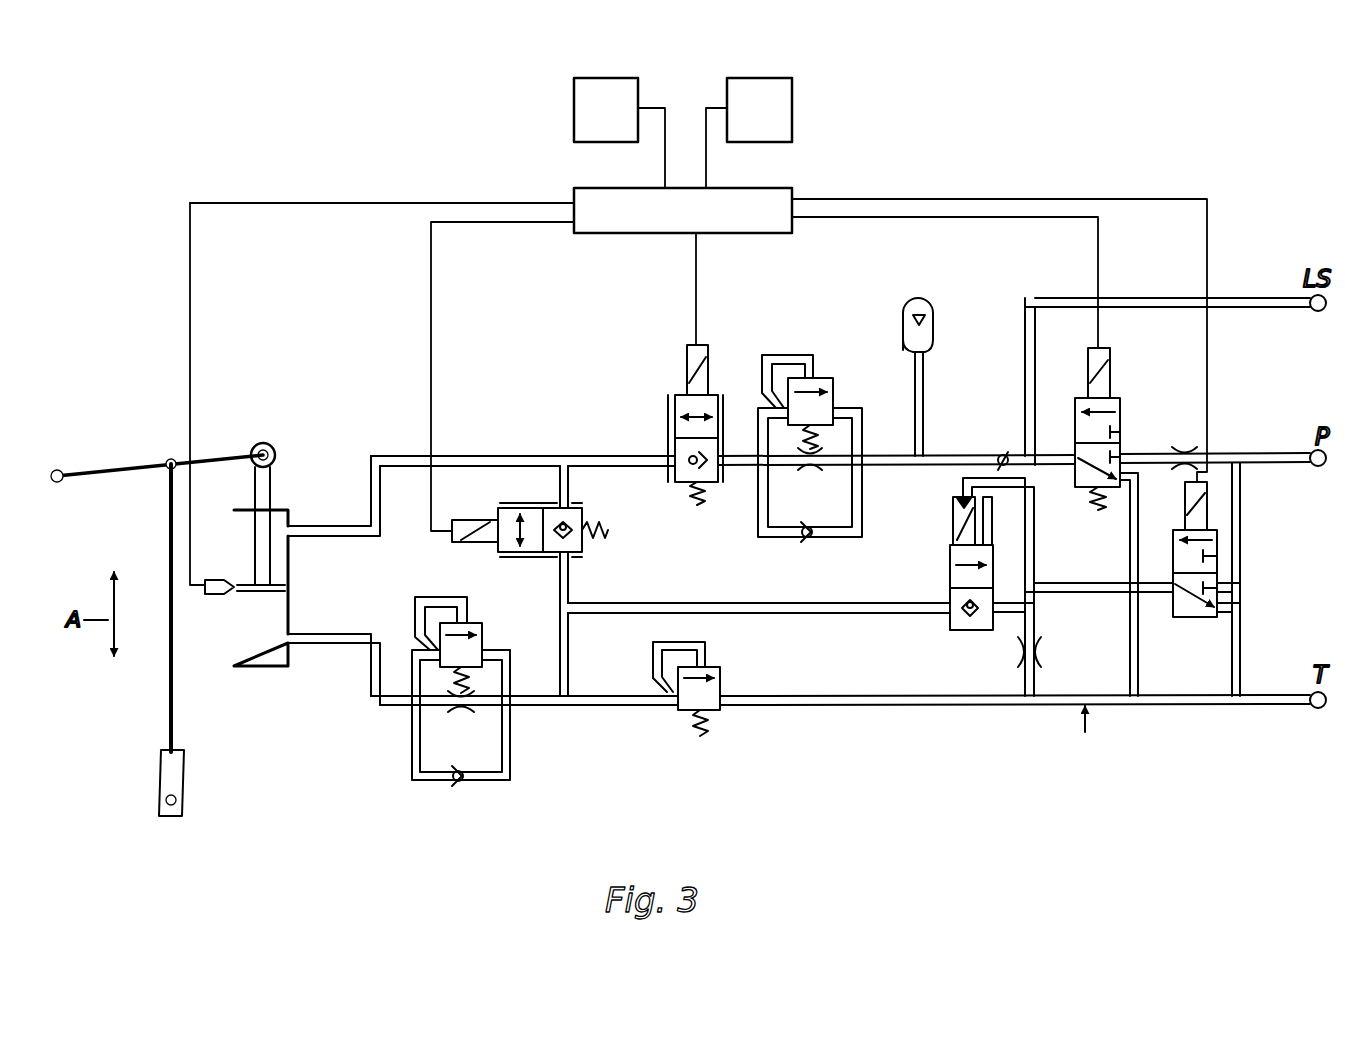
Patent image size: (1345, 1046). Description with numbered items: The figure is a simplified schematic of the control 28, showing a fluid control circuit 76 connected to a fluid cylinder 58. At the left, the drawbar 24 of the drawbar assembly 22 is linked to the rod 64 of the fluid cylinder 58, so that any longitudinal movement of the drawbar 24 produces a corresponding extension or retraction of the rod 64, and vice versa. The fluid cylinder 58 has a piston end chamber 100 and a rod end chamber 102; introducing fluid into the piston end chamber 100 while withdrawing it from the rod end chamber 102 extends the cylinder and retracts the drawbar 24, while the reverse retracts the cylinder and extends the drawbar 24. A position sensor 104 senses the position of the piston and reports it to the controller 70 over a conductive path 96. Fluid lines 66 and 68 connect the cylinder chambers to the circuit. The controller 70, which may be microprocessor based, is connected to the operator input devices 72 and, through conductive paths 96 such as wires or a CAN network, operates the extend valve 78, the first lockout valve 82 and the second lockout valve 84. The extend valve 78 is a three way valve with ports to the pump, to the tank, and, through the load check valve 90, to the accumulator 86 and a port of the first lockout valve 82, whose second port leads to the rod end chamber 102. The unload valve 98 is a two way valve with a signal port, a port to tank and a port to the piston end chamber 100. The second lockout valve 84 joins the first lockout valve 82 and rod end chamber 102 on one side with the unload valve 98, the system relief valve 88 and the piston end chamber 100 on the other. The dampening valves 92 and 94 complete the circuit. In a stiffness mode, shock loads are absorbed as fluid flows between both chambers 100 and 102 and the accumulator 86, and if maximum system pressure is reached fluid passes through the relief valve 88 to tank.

The drawbar assembly 22 is at (104, 455).
The drawbar 24 is at (184, 805).
The control 28 is at (1172, 134).
The fluid cylinder 58 is at (279, 593).
The rod 64 is at (270, 491).
The fluid line 66 is at (366, 538).
The fluid line 68 is at (329, 646).
The controller 70 is at (792, 187).
The input devices 72 is at (574, 112).
The fluid control circuit 76 is at (1073, 747).
The extend valve 78 is at (1120, 412).
The first lockout valve 82 is at (676, 393).
The second lockout valve 84 is at (583, 550).
The accumulator 86 is at (935, 325).
The system relief valve 88 is at (720, 710).
The load check valve 90 is at (999, 453).
The dampening valve 92 is at (832, 380).
The dampening valve 94 is at (482, 642).
The conductive paths 96 is at (650, 107).
The unload valve 98 is at (950, 631).
The piston end chamber 100 is at (264, 641).
The rod end chamber 102 is at (281, 517).
The position sensor 104 is at (207, 577).